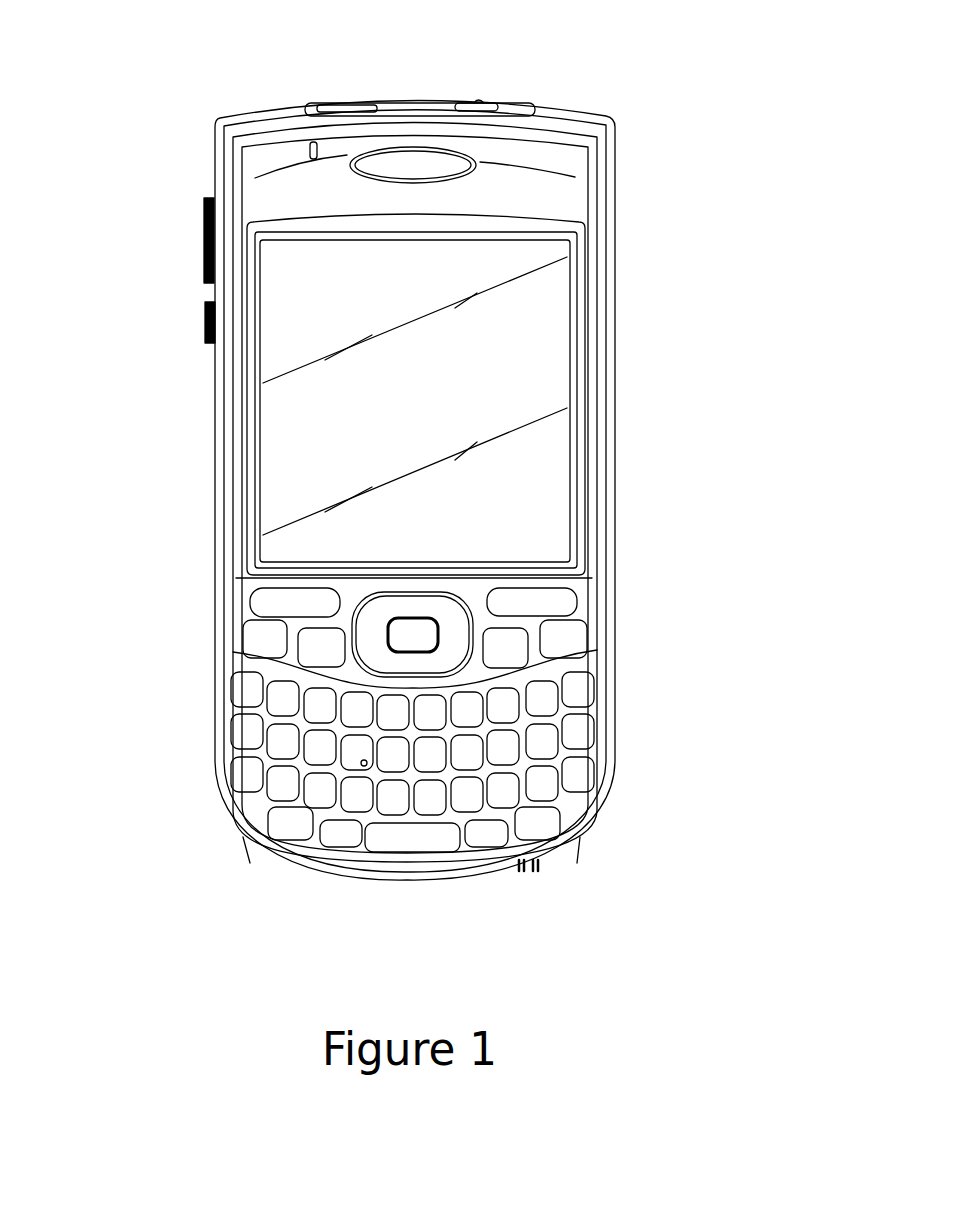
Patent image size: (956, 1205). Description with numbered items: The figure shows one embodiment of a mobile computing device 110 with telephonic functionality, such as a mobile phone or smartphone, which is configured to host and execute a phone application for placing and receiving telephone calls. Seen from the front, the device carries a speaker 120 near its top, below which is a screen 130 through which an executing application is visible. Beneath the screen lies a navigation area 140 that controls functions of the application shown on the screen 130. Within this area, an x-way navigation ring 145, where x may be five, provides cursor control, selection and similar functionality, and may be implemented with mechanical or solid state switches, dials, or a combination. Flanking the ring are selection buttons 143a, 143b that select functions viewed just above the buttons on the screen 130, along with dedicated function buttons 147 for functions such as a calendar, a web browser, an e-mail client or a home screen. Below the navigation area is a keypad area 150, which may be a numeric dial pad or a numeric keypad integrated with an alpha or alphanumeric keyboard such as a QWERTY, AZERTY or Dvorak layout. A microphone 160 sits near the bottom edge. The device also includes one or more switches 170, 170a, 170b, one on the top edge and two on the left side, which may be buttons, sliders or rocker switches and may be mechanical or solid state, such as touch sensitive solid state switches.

The mobile computing device 110 is at (613, 128).
The speaker 120 is at (410, 157).
The screen 130 is at (545, 358).
The navigation area 140 is at (442, 596).
The selection button 143a is at (262, 597).
The selection button 143b is at (550, 600).
The navigation ring 145 is at (450, 617).
The dedicated function buttons 147 is at (317, 652).
The keypad area 150 is at (623, 678).
The microphone 160 is at (533, 880).
The switch 170 is at (485, 95).
The switch 170a is at (201, 230).
The switch 170b is at (206, 324).